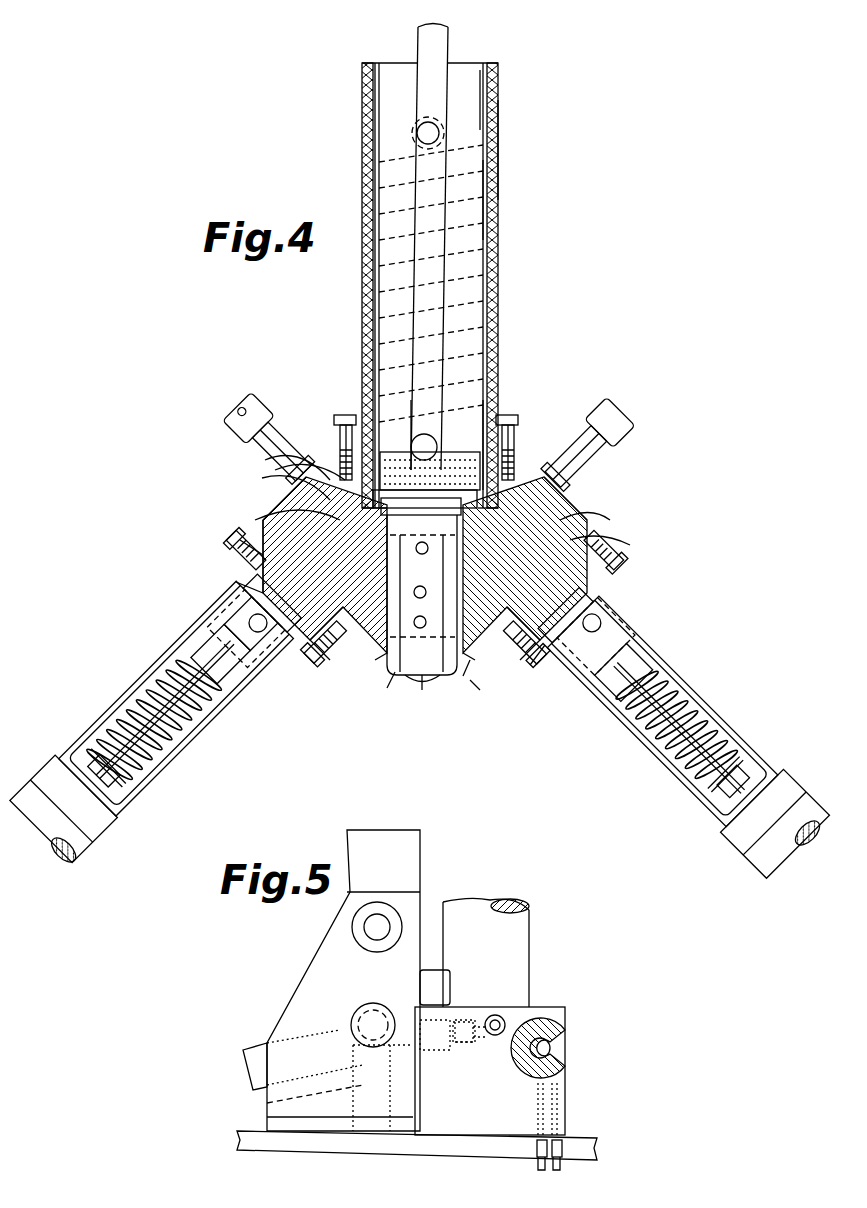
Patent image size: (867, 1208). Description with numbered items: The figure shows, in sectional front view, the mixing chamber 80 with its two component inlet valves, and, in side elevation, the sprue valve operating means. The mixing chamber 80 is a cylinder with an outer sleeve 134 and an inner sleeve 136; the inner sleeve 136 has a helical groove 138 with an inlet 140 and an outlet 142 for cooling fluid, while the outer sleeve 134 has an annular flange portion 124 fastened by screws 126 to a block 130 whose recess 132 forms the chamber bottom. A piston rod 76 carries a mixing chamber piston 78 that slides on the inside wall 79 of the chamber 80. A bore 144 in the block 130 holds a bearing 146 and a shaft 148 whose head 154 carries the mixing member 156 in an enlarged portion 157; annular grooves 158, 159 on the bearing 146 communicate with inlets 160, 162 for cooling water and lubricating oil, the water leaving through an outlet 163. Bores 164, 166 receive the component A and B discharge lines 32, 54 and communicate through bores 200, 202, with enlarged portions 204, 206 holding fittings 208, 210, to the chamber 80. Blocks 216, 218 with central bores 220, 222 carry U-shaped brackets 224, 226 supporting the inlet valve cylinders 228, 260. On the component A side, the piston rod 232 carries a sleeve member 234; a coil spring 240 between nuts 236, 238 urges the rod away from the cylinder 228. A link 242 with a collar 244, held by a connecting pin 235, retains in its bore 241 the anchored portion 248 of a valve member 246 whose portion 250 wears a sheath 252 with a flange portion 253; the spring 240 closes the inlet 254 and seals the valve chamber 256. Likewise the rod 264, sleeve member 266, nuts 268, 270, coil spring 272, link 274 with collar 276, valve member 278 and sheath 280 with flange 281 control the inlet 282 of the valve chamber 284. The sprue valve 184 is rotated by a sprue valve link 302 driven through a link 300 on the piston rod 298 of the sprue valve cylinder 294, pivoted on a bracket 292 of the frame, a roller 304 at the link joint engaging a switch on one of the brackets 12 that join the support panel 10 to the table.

In FIG. 5, the support panel 10 is at (421, 850).
In FIG. 5, the brackets 12 is at (350, 933).
In FIG. 4, the component A discharge line 32 is at (235, 405).
In FIG. 4, the component B discharge line 54 is at (604, 421).
In FIG. 4, the piston rod 76 is at (450, 40).
In FIG. 4, the mixing chamber piston 78 is at (490, 470).
In FIG. 4, the inside wall 79 is at (380, 188).
In FIG. 4, the mixing chamber 80 is at (508, 236).
In FIG. 5, the mixing chamber 80 is at (531, 938).
In FIG. 4, the annular flange portion 124 is at (345, 414).
In FIG. 4, the screws 126 is at (351, 414).
In FIG. 4, the block 130 is at (585, 500).
In FIG. 5, the block 130 is at (566, 1118).
In FIG. 4, the recess 132 is at (330, 440).
In FIG. 4, the outer sleeve 134 is at (499, 152).
In FIG. 4, the inner sleeve 136 is at (482, 72).
In FIG. 4, the helical groove 138 is at (485, 200).
In FIG. 4, the inlet 140 is at (445, 128).
In FIG. 4, the outlet 142 is at (440, 420).
In FIG. 4, the bore 144 is at (515, 636).
In FIG. 4, the bearing 146 is at (392, 688).
In FIG. 4, the shaft 148 is at (430, 690).
In FIG. 4, the head 154 is at (470, 455).
In FIG. 4, the mixing member 156 is at (440, 440).
In FIG. 4, the enlarged portion 157 is at (300, 455).
In FIG. 4, the annular groove 158 is at (383, 662).
In FIG. 4, the annular groove 159 is at (500, 660).
In FIG. 4, the inlet 160 is at (418, 670).
In FIG. 4, the inlet 162 is at (421, 555).
In FIG. 4, the outlet 163 is at (423, 690).
In FIG. 4, the bore 164 is at (275, 470).
In FIG. 4, the bore 166 is at (565, 505).
In FIG. 5, the sprue valve 184 is at (550, 1050).
In FIG. 4, the bore 200 is at (300, 505).
In FIG. 4, the bore 202 is at (605, 520).
In FIG. 4, the enlarged portion 204 is at (258, 518).
In FIG. 4, the enlarged portion 206 is at (635, 525).
In FIG. 4, the fitting 208 is at (238, 548).
In FIG. 4, the fitting 210 is at (605, 540).
In FIG. 4, the block 216 is at (240, 558).
In FIG. 4, the block 218 is at (622, 575).
In FIG. 4, the central bore 220 is at (250, 600).
In FIG. 4, the central bore 222 is at (605, 592).
In FIG. 4, the U-shaped bracket 224 is at (205, 615).
In FIG. 4, the U-shaped bracket 226 is at (645, 620).
In FIG. 4, the component A mixing chamber inlet valve cylinder 228 is at (46, 762).
In FIG. 4, the piston rod 232 is at (170, 700).
In FIG. 4, the sleeve member 234 is at (255, 645).
In FIG. 4, the connecting pin 235 is at (328, 665).
In FIG. 4, the nut 236 is at (220, 665).
In FIG. 4, the nut 238 is at (100, 795).
In FIG. 4, the coil spring 240 is at (165, 725).
In FIG. 4, the bore 241 is at (330, 652).
In FIG. 4, the link 242 is at (260, 635).
In FIG. 4, the collar 244 is at (345, 640).
In FIG. 4, the valve member 246 is at (262, 478).
In FIG. 4, the anchored portion 248 is at (235, 572).
In FIG. 4, the portion 250 is at (265, 460).
In FIG. 4, the sheath 252 is at (421, 517).
In FIG. 4, the annular flange portion 253 is at (240, 540).
In FIG. 4, the component A mixing chamber inlet 254 is at (228, 420).
In FIG. 4, the component A mixing chamber inlet valve chamber 256 is at (255, 520).
In FIG. 4, the component B mixing chamber inlet valve cylinder 260 is at (760, 866).
In FIG. 4, the piston rod 264 is at (690, 720).
In FIG. 4, the sleeve member 266 is at (590, 660).
In FIG. 4, the nut 268 is at (610, 660).
In FIG. 4, the nut 270 is at (728, 803).
In FIG. 4, the coil spring 272 is at (705, 739).
In FIG. 4, the link 274 is at (540, 665).
In FIG. 4, the collar 276 is at (482, 692).
In FIG. 4, the valve member 278 is at (530, 650).
In FIG. 4, the sheath 280 is at (508, 425).
In FIG. 4, the annular flange portion 281 is at (475, 670).
In FIG. 4, the component B mixing chamber inlet 282 is at (525, 445).
In FIG. 4, the component B inlet valve chamber 284 is at (560, 470).
In FIG. 5, the bracket 292 is at (267, 1103).
In FIG. 5, the sprue valve cylinder 294 is at (255, 1046).
In FIG. 5, the piston rod 298 is at (437, 1050).
In FIG. 5, the link 300 is at (477, 1040).
In FIG. 5, the sprue valve link 302 is at (506, 1022).
In FIG. 5, the roller 304 is at (503, 1015).